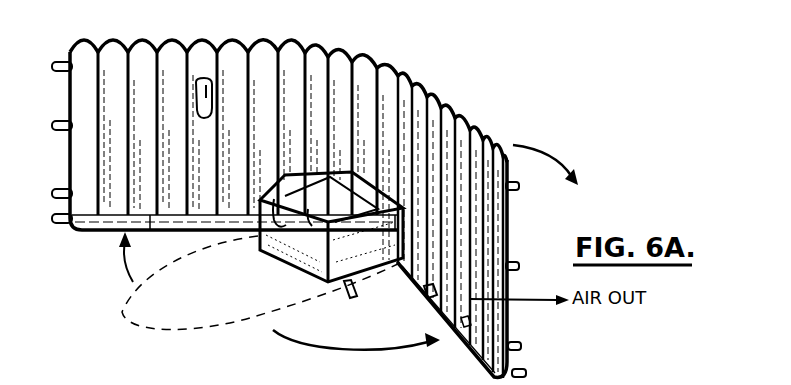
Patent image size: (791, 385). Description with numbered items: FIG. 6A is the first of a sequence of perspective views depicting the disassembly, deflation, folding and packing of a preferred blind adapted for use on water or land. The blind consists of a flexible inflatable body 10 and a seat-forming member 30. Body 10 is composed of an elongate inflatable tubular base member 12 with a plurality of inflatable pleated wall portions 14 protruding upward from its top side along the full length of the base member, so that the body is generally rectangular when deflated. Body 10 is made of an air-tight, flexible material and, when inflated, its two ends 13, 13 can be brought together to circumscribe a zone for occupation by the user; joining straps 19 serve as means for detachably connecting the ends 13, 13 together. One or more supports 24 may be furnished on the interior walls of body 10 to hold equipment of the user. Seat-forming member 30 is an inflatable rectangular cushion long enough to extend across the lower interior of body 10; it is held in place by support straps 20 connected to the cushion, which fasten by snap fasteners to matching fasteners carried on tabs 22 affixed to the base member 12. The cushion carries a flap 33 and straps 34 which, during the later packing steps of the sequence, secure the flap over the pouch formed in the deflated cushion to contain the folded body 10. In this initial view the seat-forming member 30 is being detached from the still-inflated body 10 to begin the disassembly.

The flexible inflatable body 10 is at (389, 43).
The elongate inflatable tubular base member 12 is at (192, 224).
The ends of body 13 is at (70, 100).
The inflatable pleated wall portions 14 is at (122, 125).
The joining straps 19 is at (58, 62).
The support straps 20 is at (358, 297).
The tabs 22 is at (428, 298).
The supports 24 is at (200, 80).
The seat-forming member 30 is at (258, 265).
The flap 33 is at (322, 200).
The straps 34 is at (272, 222).